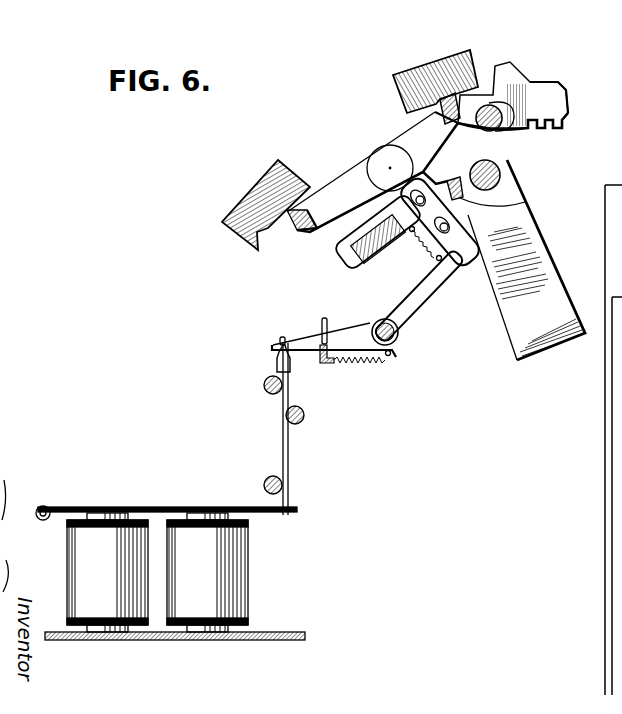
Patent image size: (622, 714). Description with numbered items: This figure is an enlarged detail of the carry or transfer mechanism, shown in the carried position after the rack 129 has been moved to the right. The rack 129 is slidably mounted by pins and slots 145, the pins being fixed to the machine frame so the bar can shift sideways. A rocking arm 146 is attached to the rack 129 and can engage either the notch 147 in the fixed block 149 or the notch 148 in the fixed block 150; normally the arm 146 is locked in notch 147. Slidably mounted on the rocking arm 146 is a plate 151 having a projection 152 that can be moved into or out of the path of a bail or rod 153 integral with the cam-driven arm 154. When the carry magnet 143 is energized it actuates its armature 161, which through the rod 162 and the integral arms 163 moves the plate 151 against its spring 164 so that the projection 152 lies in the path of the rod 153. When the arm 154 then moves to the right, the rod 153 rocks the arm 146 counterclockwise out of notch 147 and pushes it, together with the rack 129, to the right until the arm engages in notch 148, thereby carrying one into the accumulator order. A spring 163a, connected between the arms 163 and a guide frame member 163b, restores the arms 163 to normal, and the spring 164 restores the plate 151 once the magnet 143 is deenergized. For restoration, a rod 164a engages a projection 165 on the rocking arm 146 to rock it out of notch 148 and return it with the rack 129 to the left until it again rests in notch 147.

The rack 129 is at (560, 88).
The carry magnet 143 is at (230, 567).
The pins and slots 145 is at (507, 110).
The rocking arm 146 is at (337, 190).
The notch 147 is at (278, 221).
The notch 148 is at (442, 97).
The block 149 is at (263, 187).
The block 150 is at (415, 68).
The plate 151 is at (462, 240).
The projection 152 is at (411, 233).
The bail or rod 153 is at (353, 238).
The arm 154 is at (525, 342).
The armature 161 is at (153, 505).
The rod 162 is at (290, 445).
The arms 163 is at (415, 315).
The spring 163a is at (350, 360).
The guide frame member 163b is at (317, 332).
The spring 164 is at (437, 257).
The rod 164a is at (500, 175).
The projection 165 is at (527, 202).